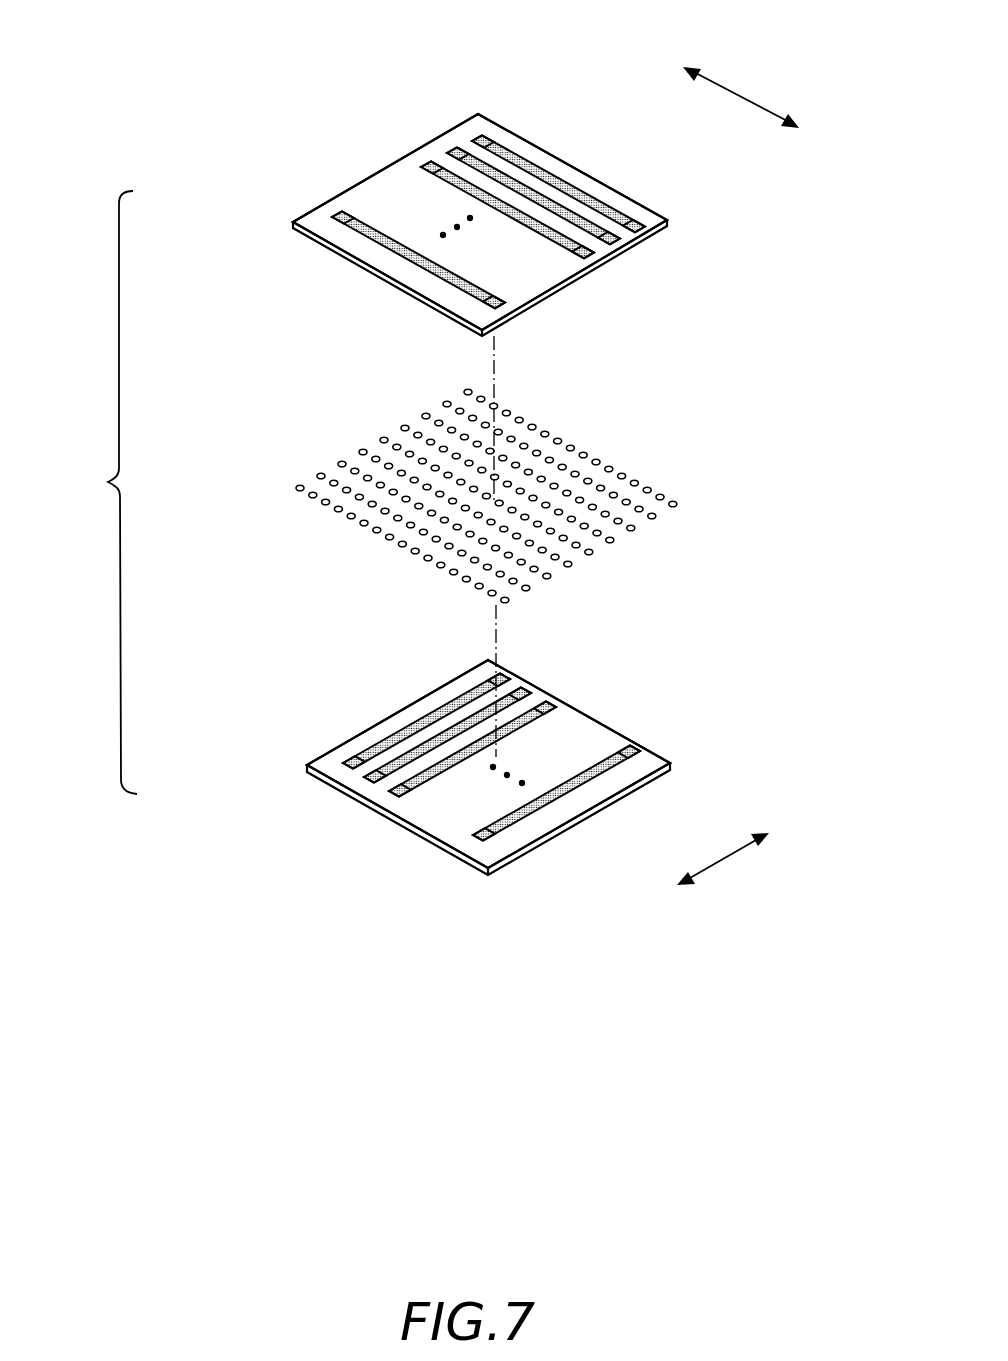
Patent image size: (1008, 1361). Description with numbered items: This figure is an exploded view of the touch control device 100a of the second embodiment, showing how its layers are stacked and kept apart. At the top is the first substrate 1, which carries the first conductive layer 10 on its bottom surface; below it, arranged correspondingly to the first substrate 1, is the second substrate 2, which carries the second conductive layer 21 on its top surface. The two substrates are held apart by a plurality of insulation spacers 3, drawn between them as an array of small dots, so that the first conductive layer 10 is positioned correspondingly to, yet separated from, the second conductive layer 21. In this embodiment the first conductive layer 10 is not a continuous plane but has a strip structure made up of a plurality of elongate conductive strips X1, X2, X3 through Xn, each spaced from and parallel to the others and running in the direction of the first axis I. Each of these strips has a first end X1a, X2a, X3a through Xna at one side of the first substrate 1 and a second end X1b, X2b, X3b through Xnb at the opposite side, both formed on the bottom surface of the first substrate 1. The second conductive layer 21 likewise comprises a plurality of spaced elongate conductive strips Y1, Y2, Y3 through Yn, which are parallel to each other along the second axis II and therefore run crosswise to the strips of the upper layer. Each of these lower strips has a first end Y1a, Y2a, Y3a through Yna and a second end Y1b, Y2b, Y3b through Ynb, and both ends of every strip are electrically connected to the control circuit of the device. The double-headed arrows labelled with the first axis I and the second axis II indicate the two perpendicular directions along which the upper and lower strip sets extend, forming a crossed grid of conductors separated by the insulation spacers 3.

The touch control device 100a is at (85, 492).
The first conductive layer 10 is at (500, 128).
The first substrate 1 is at (568, 288).
The second substrate 2 is at (594, 817).
The second conductive layer 21 is at (613, 737).
The insulation spacers 3 is at (651, 486).
The elongate conductive strip X1 is at (537, 196).
The elongate conductive strip X2 is at (578, 210).
The elongate conductive strip X3 is at (616, 236).
The elongate conductive strip Xn is at (398, 250).
The first end X1a is at (664, 225).
The first end X2a is at (633, 234).
The first end X3a is at (607, 260).
The first end Xna is at (513, 311).
The second end X1b is at (476, 136).
The second end X2b is at (450, 151).
The second end X3b is at (424, 165).
The second end Xnb is at (334, 214).
The elongate conductive strip Y1 is at (443, 707).
The elongate conductive strip Y2 is at (370, 772).
The elongate conductive strip Y3 is at (378, 785).
The elongate conductive strip Yn is at (523, 818).
The first end Y1a is at (507, 667).
The first end Y2a is at (553, 698).
The first end Y3a is at (585, 708).
The first end Yna is at (638, 744).
The second end Y1b is at (306, 770).
The second end Y2b is at (342, 786).
The second end Y3b is at (370, 803).
The second end Ynb is at (466, 838).
The first axis I is at (743, 96).
The second axis II is at (733, 858).